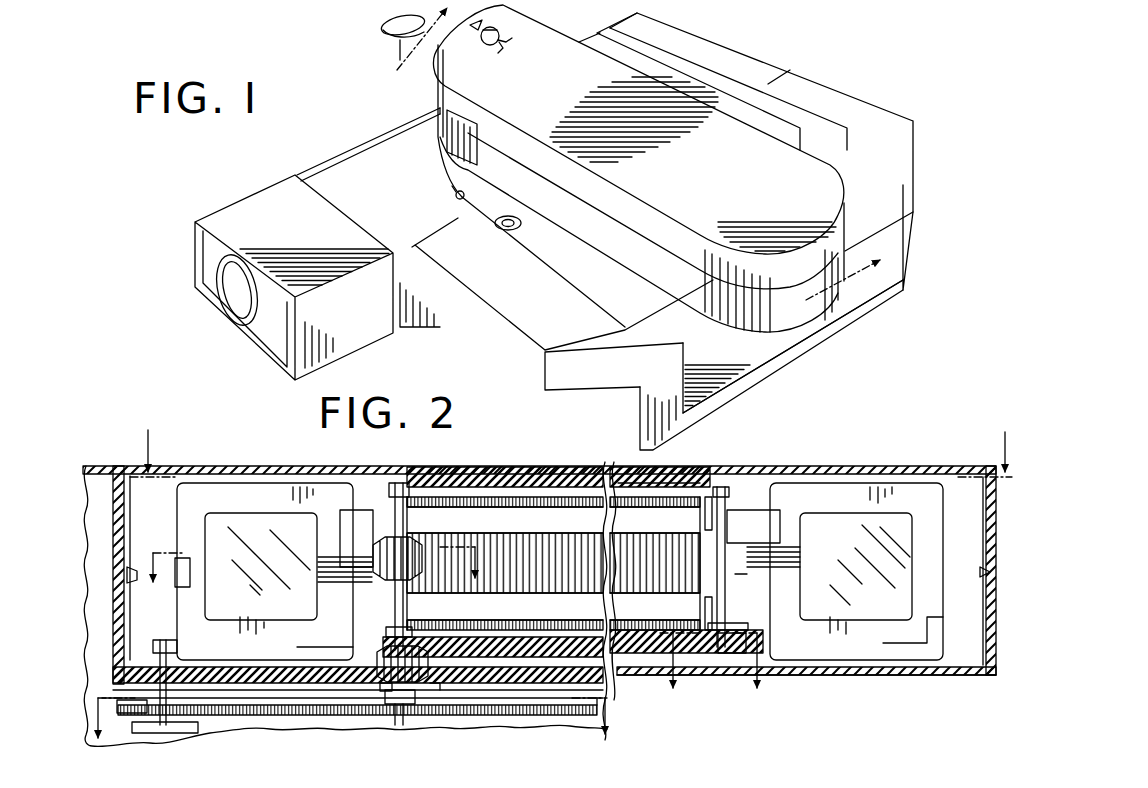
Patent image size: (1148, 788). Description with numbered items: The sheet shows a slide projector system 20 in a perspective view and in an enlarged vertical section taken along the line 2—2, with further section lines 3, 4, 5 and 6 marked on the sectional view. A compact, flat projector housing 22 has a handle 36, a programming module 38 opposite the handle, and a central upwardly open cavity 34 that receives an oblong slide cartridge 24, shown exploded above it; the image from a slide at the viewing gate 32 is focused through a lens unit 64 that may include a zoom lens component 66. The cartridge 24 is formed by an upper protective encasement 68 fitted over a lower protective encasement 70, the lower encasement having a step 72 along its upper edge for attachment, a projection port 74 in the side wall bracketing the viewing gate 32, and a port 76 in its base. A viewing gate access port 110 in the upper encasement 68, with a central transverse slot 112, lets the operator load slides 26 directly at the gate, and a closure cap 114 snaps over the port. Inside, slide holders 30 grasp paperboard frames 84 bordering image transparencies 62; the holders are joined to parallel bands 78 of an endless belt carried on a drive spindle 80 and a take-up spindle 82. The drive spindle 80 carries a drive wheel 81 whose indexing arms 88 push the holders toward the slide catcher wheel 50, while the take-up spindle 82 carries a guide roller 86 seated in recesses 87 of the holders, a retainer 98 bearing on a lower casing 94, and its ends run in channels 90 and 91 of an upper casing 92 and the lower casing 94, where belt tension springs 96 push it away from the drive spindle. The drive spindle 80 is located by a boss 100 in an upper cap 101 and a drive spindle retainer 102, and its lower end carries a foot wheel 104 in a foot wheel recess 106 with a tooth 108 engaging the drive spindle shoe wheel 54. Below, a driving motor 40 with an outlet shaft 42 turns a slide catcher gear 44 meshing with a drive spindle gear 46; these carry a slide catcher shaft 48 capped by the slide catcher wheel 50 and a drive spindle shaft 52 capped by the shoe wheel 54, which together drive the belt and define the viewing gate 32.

In FIG. 1, the slide projector system 20 is at (790, 54).
In FIG. 1, the projector housing 22 is at (878, 104).
In FIG. 1, the slide cartridge 24 is at (626, 36).
In FIG. 2, the slide cartridge 24 is at (957, 468).
In FIG. 2, the slides 26 is at (870, 470).
In FIG. 2, the slide holders 30 is at (356, 508).
In FIG. 2, the viewing gate 32 is at (213, 470).
In FIG. 1, the cavity 34 is at (732, 361).
In FIG. 1, the handle 36 is at (507, 352).
In FIG. 1, the programming module 38 is at (740, 54).
In FIG. 2, the driving motor 40 is at (180, 716).
In FIG. 2, the outlet shaft 42 is at (163, 726).
In FIG. 2, the slide catcher gear 44 is at (133, 714).
In FIG. 2, the drive spindle gear 46 is at (375, 705).
In FIG. 2, the slide catcher shaft 48 is at (193, 733).
In FIG. 1, the slide catcher wheel 50 is at (456, 192).
In FIG. 2, the slide catcher wheel 50 is at (160, 640).
In FIG. 2, the drive spindle shaft 52 is at (405, 695).
In FIG. 1, the drive spindle shoe wheel 54 is at (508, 236).
In FIG. 2, the drive spindle shoe wheel 54 is at (430, 690).
In FIG. 2, the image transparency 62 is at (248, 551).
In FIG. 1, the lens unit 64 is at (253, 200).
In FIG. 1, the zoom lens component 66 is at (233, 283).
In FIG. 1, the upper protective encasement 68 is at (733, 186).
In FIG. 2, the upper protective encasement 68 is at (818, 466).
In FIG. 1, the lower protective encasement 70 is at (715, 302).
In FIG. 2, the lower protective encasement 70 is at (875, 670).
In FIG. 2, the step 72 is at (982, 574).
In FIG. 1, the projection port 74 is at (462, 137).
In FIG. 2, the port 76 is at (180, 655).
In FIG. 2, the parallel bands 78 is at (495, 500).
In FIG. 2, the drive spindle 80 is at (397, 484).
In FIG. 2, the drive wheel 81 is at (420, 542).
In FIG. 2, the take-up spindle 82 is at (720, 488).
In FIG. 2, the paperboard frames 84 is at (262, 480).
In FIG. 2, the guide roller 86 is at (775, 548).
In FIG. 2, the recesses 87 is at (740, 572).
In FIG. 2, the indexing arms 88 is at (345, 556).
In FIG. 2, the channel 90 is at (740, 508).
In FIG. 2, the channel 91 is at (740, 655).
In FIG. 2, the upper casing 92 is at (612, 466).
In FIG. 2, the lower casing 94 is at (636, 670).
In FIG. 2, the belt tension springs 96 is at (706, 497).
In FIG. 2, the retainer 98 is at (730, 624).
In FIG. 2, the boss 100 is at (405, 484).
In FIG. 2, the upper cap 101 is at (476, 467).
In FIG. 2, the drive spindle retainer 102 is at (388, 628).
In FIG. 2, the foot wheel 104 is at (418, 648).
In FIG. 1, the foot wheel recess 106 is at (517, 226).
In FIG. 2, the foot wheel recess 106 is at (394, 705).
In FIG. 2, the tooth 108 is at (400, 728).
In FIG. 1, the viewing gate access port 110 is at (486, 51).
In FIG. 1, the slot 112 is at (505, 46).
In FIG. 1, the closure cap 114 is at (382, 24).
In FIG. 1, the section line 2— 2 is at (599, 163).
In FIG. 2, the section line 3- 3 is at (571, 437).
In FIG. 2, the section line 4- 4 is at (322, 579).
In FIG. 2, the section line 5- 5 is at (343, 743).
In FIG. 2, the section line 6- 6 is at (707, 680).